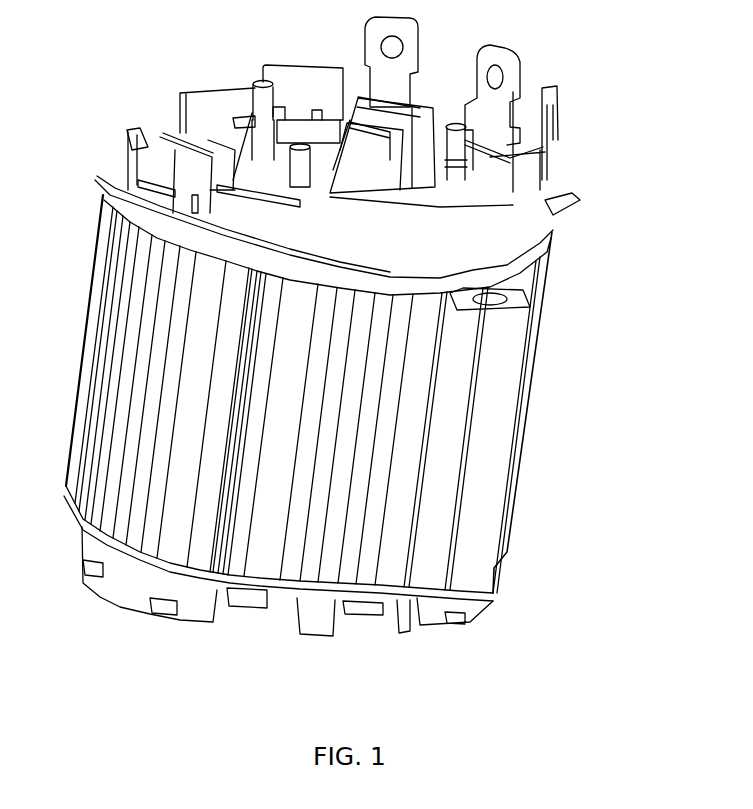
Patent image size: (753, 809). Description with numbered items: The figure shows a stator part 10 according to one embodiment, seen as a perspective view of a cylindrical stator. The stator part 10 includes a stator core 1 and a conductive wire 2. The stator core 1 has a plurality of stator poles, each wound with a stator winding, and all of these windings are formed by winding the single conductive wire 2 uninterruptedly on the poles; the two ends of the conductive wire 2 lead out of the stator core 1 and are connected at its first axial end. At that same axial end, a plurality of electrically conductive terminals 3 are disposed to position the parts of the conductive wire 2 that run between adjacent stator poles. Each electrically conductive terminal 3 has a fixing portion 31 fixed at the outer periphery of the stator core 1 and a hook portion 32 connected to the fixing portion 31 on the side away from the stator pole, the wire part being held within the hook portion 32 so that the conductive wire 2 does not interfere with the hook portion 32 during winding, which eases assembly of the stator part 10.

The stator core 1 is at (139, 516).
The conductive wire 2 is at (101, 171).
The electrically conductive terminal 3 is at (172, 155).
The fixing portion 31 is at (527, 185).
The hook portion 32 is at (560, 208).
The stator part 10 is at (538, 383).